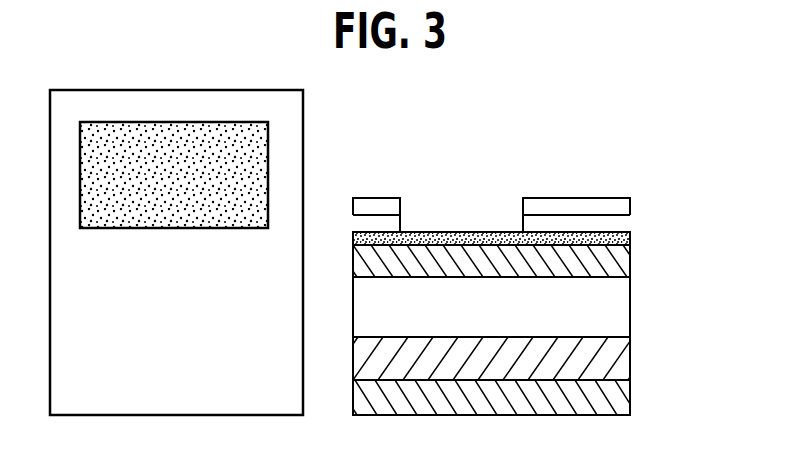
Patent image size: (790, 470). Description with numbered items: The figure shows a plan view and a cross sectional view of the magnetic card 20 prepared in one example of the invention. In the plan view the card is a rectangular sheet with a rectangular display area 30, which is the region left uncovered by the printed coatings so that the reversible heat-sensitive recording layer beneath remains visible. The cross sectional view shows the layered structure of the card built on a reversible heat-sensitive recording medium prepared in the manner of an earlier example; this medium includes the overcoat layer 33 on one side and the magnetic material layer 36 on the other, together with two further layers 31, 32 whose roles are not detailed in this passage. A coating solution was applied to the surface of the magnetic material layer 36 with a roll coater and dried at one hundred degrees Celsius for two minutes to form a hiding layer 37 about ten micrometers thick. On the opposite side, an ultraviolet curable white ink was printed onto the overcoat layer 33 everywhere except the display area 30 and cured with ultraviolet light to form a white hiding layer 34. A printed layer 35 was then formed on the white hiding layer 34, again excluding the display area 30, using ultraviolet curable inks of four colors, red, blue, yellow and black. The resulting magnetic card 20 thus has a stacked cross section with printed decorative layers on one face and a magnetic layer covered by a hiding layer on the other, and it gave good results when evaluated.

The magnetic card 20 is at (478, 103).
The display area 30 is at (245, 183).
The substrate 31 is at (632, 316).
The buffer layer 32 is at (632, 260).
The overcoat layer 33 is at (632, 238).
The white hiding layer 34 is at (632, 215).
The printed layer 35 is at (632, 198).
The magnetic material layer 36 is at (632, 358).
The hiding layer 37 is at (632, 400).